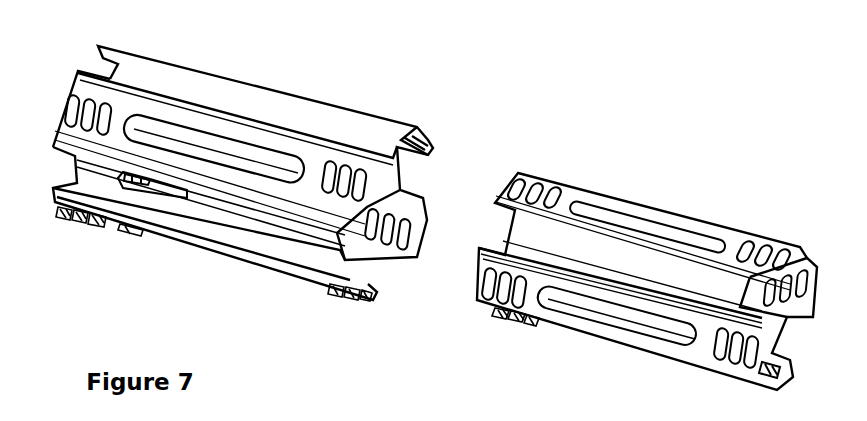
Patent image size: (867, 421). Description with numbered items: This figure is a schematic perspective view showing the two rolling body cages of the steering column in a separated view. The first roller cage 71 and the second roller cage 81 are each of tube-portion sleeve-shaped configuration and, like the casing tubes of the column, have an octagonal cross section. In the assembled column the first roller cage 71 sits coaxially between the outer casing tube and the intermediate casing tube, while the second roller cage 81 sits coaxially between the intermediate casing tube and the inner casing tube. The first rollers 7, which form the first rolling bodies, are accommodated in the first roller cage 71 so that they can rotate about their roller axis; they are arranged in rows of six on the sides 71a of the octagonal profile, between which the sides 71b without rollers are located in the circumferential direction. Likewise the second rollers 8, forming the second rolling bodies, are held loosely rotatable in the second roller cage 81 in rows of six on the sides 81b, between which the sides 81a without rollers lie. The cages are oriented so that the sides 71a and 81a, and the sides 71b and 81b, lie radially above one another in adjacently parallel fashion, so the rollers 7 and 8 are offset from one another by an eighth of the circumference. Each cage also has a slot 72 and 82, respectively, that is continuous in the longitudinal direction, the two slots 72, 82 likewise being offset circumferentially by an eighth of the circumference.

The first rollers 7 is at (100, 110).
The first roller cage 71 is at (298, 73).
The sides of the first roller cage carrying rollers 71a is at (126, 112).
The sides of the first roller cage without rollers 71b is at (325, 120).
The slot of the first roller cage 72 is at (368, 268).
The second rollers 8 is at (786, 246).
The second roller cage 81 is at (673, 140).
The sides of the second roller cage without rollers 81a is at (677, 263).
The sides of the second roller cage carrying rollers 81b is at (567, 200).
The slot of the second roller cage 82 is at (553, 324).